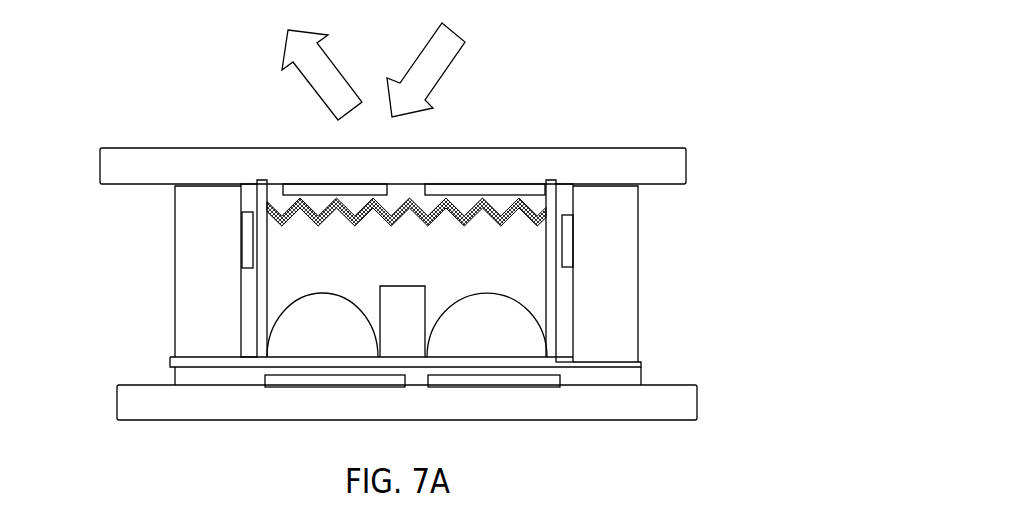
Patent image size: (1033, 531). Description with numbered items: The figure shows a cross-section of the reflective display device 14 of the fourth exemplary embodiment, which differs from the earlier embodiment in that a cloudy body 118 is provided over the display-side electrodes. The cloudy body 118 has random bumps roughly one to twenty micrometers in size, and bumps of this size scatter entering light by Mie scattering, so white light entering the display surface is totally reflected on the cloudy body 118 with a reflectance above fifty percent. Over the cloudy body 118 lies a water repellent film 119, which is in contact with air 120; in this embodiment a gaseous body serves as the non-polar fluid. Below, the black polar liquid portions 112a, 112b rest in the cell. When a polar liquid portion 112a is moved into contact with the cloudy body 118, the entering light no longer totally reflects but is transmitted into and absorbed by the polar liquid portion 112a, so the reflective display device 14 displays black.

The reflective display device 14 is at (670, 120).
The cloudy body 118 is at (405, 203).
The water repellent film 119 is at (313, 218).
The air 120 is at (397, 298).
The polar liquid portion 112a is at (322, 325).
The polar liquid portion 112b is at (487, 325).